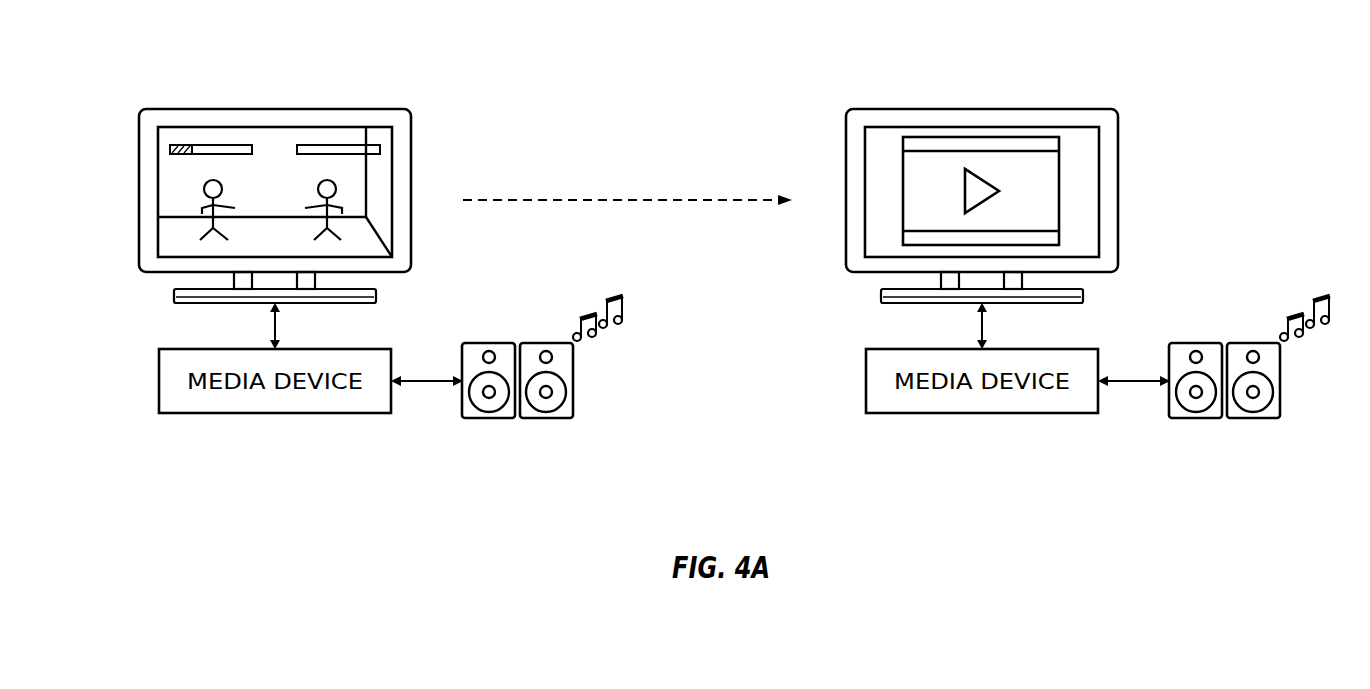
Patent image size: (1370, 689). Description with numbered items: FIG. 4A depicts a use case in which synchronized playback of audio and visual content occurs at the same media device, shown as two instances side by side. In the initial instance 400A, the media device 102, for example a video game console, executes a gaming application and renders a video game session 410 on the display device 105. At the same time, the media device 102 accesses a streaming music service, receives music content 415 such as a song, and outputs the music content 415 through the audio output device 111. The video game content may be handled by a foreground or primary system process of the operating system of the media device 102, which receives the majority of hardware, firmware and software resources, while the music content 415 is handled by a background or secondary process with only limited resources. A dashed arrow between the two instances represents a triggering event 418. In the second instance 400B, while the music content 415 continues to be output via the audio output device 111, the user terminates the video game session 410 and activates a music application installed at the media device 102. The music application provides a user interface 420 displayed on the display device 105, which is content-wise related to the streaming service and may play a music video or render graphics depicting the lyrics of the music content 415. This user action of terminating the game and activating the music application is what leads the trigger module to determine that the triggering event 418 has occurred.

The instance 400A is at (184, 55).
The instance 400B is at (891, 55).
The display device 105 is at (386, 109).
The video game session 410 is at (375, 187).
The user interface 420 is at (1042, 193).
The triggering event 418 is at (627, 178).
The media device 102 is at (275, 413).
The audio output device 111 is at (528, 343).
The music content 415 is at (612, 296).